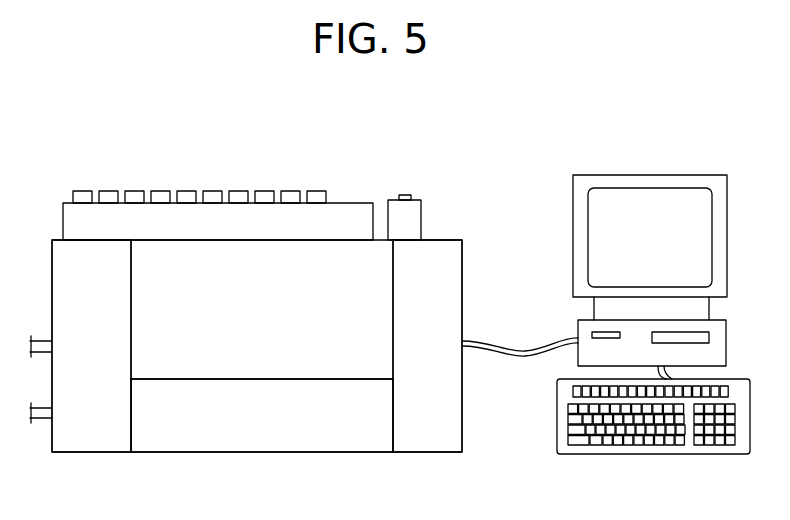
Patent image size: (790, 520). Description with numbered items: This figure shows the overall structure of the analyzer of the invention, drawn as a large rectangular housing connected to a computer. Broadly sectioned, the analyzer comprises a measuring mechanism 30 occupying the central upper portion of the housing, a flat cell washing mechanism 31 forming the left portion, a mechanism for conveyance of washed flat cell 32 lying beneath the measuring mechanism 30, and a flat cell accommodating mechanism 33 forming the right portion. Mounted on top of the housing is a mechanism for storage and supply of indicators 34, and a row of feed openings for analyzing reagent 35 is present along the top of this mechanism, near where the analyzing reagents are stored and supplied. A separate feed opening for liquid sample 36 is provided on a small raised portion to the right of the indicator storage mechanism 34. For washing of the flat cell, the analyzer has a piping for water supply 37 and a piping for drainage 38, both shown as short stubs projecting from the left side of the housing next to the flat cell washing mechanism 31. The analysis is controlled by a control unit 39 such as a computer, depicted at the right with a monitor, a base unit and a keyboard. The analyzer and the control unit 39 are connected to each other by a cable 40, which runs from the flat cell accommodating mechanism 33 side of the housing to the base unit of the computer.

The measuring mechanism 30 is at (257, 346).
The flat cell washing mechanism 31 is at (91, 346).
The mechanism for conveyance of washed flat cell 32 is at (262, 415).
The flat cell accommodating mechanism 33 is at (427, 346).
The mechanism for storage and supply of indicators 34 is at (218, 221).
The feed openings for analyzing reagent 35 is at (73, 190).
The feed opening for liquid sample 36 is at (405, 194).
The piping for water supply 37 is at (40, 338).
The piping for drainage 38 is at (43, 422).
The control unit 39 is at (576, 320).
The cable 40 is at (516, 356).